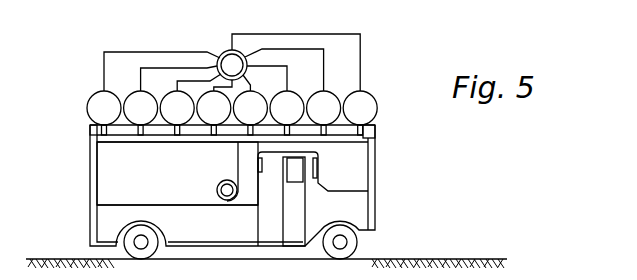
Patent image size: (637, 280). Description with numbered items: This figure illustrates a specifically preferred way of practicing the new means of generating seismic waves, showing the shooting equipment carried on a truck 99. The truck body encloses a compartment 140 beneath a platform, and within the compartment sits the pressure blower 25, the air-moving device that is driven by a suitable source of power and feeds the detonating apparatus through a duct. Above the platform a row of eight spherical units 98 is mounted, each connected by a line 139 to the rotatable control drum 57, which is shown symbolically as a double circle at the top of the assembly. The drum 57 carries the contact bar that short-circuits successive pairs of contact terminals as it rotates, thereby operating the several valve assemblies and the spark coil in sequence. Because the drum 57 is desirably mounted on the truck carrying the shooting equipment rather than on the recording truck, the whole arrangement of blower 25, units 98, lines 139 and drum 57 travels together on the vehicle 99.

The vehicle 99 is at (232, 192).
The compartment 140 is at (162, 143).
The pressure blower 25 is at (217, 190).
The tanks 98 is at (332, 100).
The drum 57 is at (222, 52).
The conduits 139 is at (304, 74).